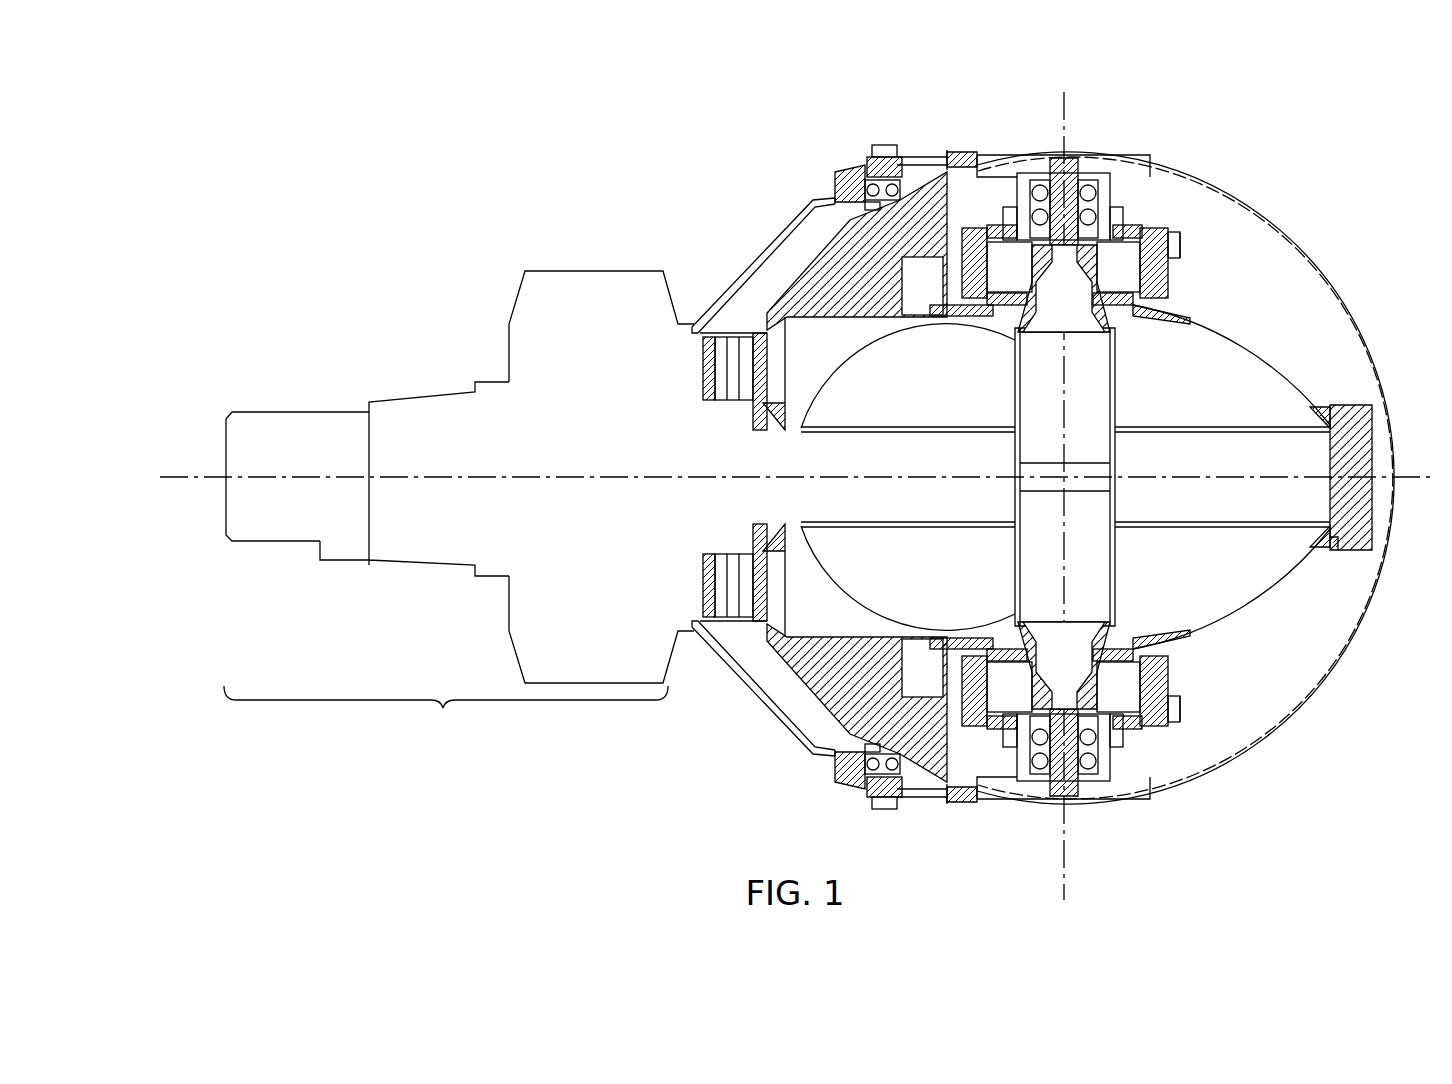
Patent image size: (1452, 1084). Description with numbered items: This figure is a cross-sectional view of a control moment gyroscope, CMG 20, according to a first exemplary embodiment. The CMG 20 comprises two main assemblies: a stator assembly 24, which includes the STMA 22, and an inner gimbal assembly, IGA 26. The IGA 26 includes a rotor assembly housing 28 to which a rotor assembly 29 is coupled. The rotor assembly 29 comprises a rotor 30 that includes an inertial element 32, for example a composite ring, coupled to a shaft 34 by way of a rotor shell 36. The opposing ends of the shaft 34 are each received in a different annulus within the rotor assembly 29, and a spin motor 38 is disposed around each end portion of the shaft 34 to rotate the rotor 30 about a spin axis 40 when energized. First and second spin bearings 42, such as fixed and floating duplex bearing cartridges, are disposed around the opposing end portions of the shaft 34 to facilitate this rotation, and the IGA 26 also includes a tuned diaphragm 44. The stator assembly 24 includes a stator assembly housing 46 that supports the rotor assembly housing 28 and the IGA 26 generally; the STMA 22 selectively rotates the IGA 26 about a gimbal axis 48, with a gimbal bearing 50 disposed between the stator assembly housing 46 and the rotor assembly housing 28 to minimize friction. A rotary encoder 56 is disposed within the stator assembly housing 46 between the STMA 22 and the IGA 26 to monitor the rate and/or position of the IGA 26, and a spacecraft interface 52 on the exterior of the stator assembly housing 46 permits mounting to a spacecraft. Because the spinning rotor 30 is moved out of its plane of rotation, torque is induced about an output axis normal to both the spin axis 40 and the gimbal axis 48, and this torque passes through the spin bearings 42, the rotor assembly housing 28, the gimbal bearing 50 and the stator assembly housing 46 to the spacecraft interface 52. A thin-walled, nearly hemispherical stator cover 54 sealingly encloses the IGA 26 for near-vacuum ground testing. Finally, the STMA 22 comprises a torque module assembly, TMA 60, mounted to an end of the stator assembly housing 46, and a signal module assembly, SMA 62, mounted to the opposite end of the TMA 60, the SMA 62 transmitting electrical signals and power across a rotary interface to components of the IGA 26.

The control moment gyroscope 20 is at (1368, 170).
The STMA 22 is at (446, 563).
The stator assembly 24 is at (740, 247).
The inner gimbal assembly 26 is at (1194, 288).
The rotor assembly housing 28 is at (848, 706).
The rotor assembly 29 is at (1236, 596).
The rotor 30 is at (891, 511).
The inertial element 32 is at (1351, 406).
The shaft 34 is at (1072, 170).
The rotor shell 36 is at (838, 569).
The spin motor 38 is at (1128, 292).
The spin axis 40 is at (1064, 108).
The spin bearings 42 is at (1094, 198).
The tuned diaphragm 44 is at (1140, 228).
The stator assembly housing 46 is at (761, 685).
The gimbal axis 48 is at (172, 477).
The gimbal bearing 50 is at (870, 184).
The spacecraft interface 52 is at (884, 144).
The stator cover 54 is at (1338, 663).
The rotary encoder 56 is at (704, 594).
The torque module assembly 60 is at (598, 284).
The signal module assembly 62 is at (301, 426).